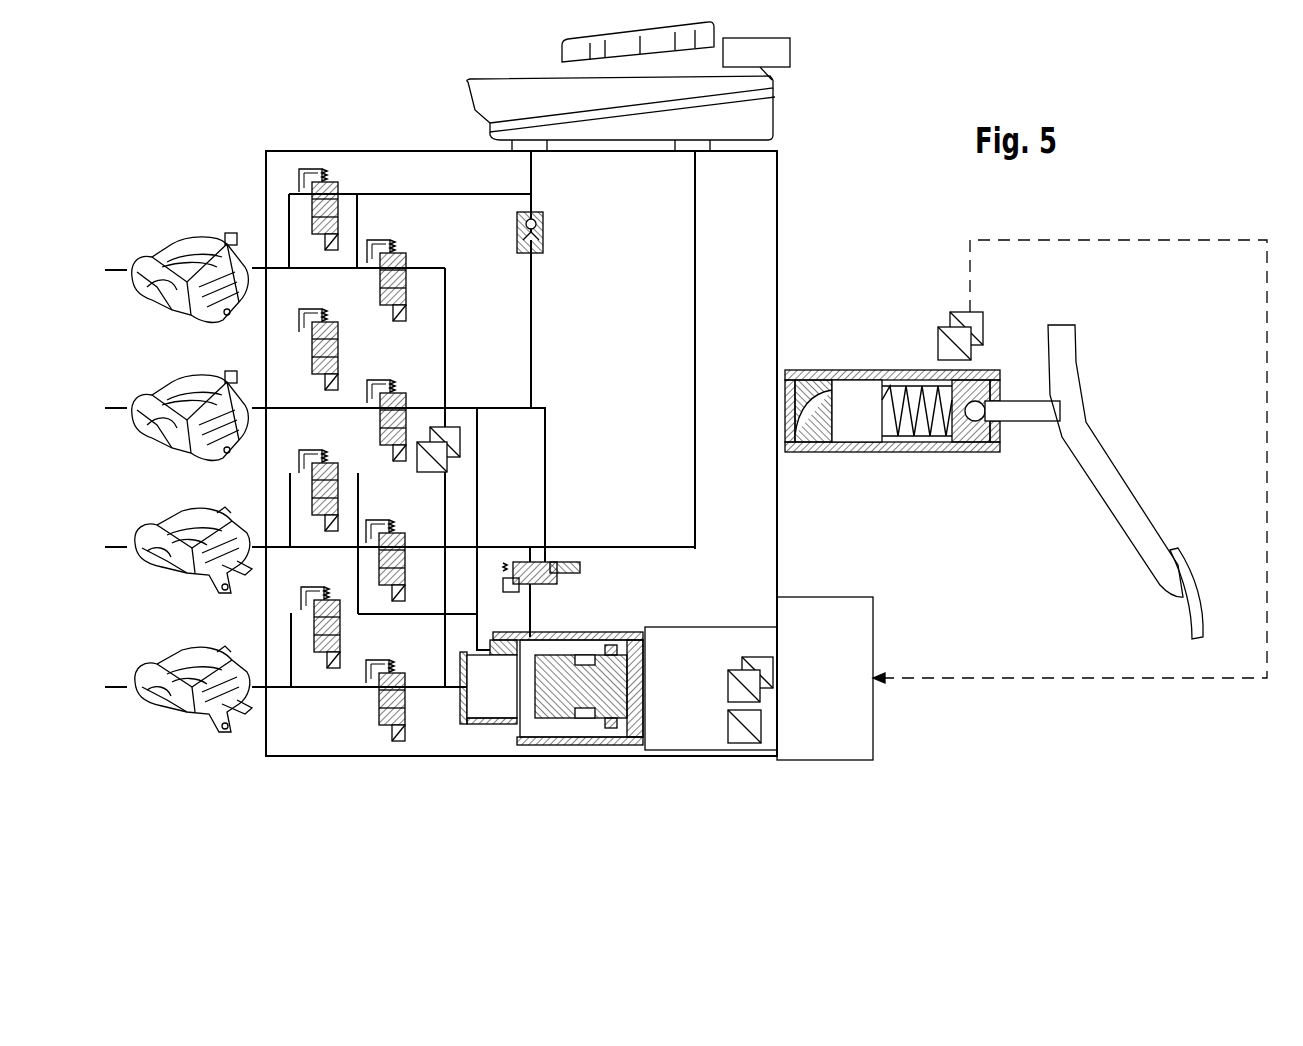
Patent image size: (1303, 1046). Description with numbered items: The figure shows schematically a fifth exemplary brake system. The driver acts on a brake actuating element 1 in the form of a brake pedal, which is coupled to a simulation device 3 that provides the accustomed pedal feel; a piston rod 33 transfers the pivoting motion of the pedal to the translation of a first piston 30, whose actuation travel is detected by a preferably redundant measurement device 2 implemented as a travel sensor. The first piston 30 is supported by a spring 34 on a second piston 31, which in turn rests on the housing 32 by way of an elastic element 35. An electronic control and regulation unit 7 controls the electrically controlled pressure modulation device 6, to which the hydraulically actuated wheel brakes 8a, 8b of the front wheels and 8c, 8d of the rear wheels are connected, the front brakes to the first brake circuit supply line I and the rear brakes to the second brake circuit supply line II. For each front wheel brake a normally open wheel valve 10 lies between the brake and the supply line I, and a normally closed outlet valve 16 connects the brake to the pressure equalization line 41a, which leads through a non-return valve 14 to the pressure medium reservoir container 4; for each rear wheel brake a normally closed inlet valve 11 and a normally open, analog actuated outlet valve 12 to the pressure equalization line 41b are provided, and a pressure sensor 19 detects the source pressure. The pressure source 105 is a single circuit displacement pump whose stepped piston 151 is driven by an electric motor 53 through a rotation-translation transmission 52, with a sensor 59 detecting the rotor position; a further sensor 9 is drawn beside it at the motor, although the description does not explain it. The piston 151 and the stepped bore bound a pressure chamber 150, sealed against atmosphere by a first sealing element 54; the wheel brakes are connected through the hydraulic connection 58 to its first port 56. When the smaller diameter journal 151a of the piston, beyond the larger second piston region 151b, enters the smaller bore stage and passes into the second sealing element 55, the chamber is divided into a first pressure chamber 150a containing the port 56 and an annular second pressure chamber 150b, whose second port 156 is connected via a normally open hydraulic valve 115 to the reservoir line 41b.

The brake actuating element 1 is at (1108, 480).
The measurement device 2 is at (990, 328).
The simulation device 3 is at (918, 480).
The pressure medium reservoir container 4 is at (520, 85).
The pressure modulation device 6 is at (330, 150).
The electronic control and regulation unit 7 is at (822, 730).
The wheel brake 8a is at (261, 277).
The wheel brake 8b is at (304, 415).
The wheel brake 8c is at (386, 550).
The wheel brake 8d is at (261, 689).
The temperature sensor 9 is at (744, 726).
The wheel valve 10 is at (406, 285).
The inlet valve 11 is at (338, 490).
The outlet valve 12 is at (378, 566).
The non-return valve 14 is at (545, 228).
The outlet valve 16 is at (312, 213).
The pressure sensor 19 is at (443, 474).
The first piston 30 is at (1000, 437).
The second piston 31 is at (850, 392).
The housing 32 is at (868, 455).
The piston rod 33 is at (1025, 402).
The spring 34 is at (897, 385).
The elastic element 35 is at (822, 435).
The pressure equalization line 41a is at (533, 172).
The pressure equalization line 41b is at (693, 308).
The rotation-translation transmission 52 is at (640, 700).
The electric motor 53 is at (712, 745).
The first sealing element 54 is at (610, 735).
The second sealing element 55 is at (510, 722).
The first port 56 is at (490, 652).
The hydraulic connection 58 is at (480, 462).
The sensor 59 is at (755, 655).
The pressure source 105 is at (622, 738).
The hydraulic valve 115 is at (545, 558).
The pressure chamber 150 is at (482, 712).
The first pressure chamber 150a is at (465, 692).
The second pressure chamber 150b is at (527, 722).
The piston 151 is at (560, 736).
The first piston region 151a is at (560, 650).
The second piston region 151b is at (640, 660).
The second port 156 is at (545, 635).
The first brake circuit supply line I is at (447, 353).
The second brake circuit supply line II is at (355, 580).